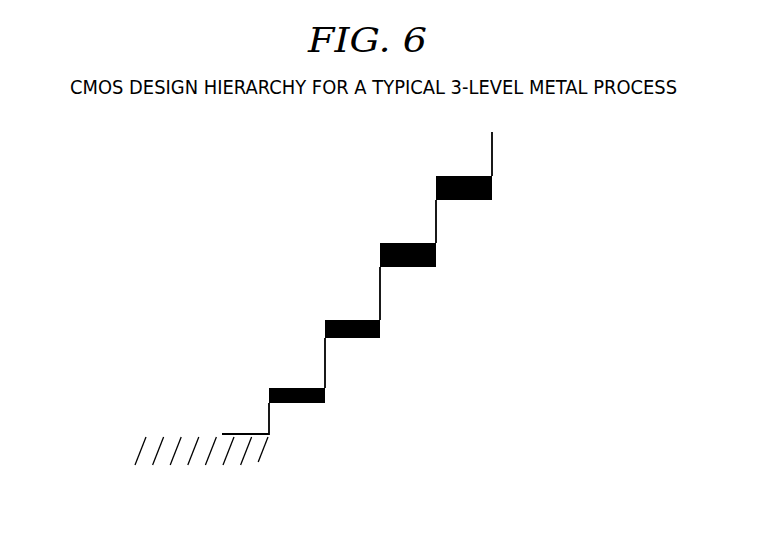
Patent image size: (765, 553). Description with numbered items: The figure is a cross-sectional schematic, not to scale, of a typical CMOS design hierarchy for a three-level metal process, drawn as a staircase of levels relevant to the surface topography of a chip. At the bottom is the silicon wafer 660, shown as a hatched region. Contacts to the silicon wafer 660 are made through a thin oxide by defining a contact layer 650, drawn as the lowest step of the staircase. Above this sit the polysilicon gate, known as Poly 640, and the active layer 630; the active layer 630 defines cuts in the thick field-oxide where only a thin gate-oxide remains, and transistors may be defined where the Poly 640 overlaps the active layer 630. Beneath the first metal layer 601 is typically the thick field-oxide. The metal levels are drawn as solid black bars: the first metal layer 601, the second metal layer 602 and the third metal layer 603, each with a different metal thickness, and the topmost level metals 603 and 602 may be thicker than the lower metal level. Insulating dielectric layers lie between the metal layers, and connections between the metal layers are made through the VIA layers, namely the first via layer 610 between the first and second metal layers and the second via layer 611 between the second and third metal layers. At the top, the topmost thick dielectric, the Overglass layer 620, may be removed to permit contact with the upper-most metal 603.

The overglass layer 620 is at (492, 146).
The metal 3 layer 603 is at (492, 187).
The via 2 layer 611 is at (436, 222).
The metal 2 layer 602 is at (436, 254).
The via 1 layer 610 is at (380, 296).
The metal 1 layer 601 is at (380, 332).
The active layer 630 is at (325, 367).
The polysilicon gate 640 is at (325, 401).
The contact layer 650 is at (269, 437).
The silicon wafer 660 is at (255, 458).